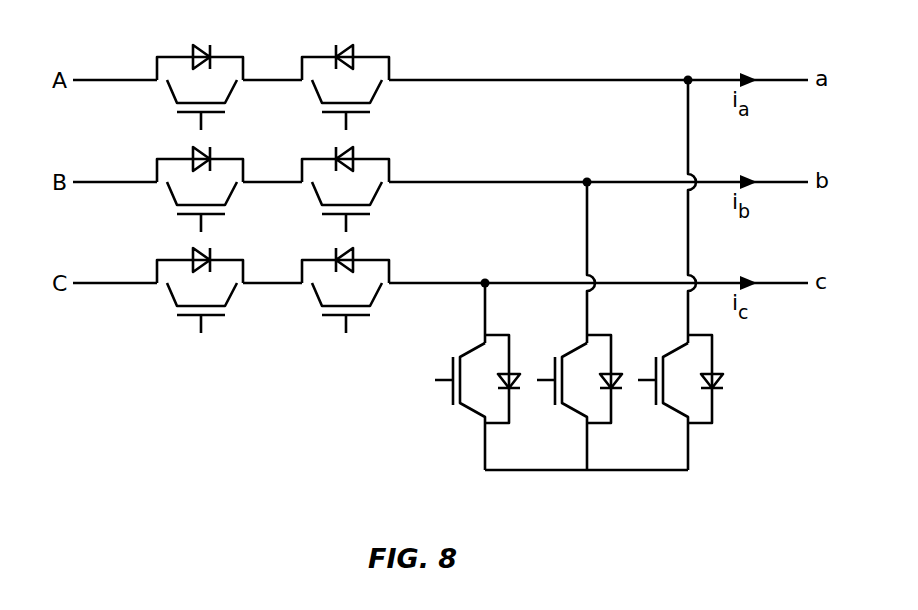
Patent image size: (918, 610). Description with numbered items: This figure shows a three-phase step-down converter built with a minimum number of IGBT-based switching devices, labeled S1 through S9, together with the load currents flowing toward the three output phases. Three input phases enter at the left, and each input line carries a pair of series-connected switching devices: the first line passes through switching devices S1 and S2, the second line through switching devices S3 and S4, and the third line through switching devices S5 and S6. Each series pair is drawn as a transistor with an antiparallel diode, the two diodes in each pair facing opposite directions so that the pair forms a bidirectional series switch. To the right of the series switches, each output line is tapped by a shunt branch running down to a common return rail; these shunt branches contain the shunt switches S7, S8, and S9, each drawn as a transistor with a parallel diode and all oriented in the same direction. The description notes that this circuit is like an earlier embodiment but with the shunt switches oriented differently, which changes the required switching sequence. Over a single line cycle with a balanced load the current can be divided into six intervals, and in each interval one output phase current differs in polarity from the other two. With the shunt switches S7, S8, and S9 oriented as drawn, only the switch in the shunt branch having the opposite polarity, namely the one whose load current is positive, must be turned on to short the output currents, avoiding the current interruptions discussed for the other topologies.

The IGBT-based switching device S1 is at (211, 87).
The IGBT-based switching device S2 is at (356, 87).
The IGBT-based switching device S3 is at (211, 189).
The IGBT-based switching device S4 is at (356, 189).
The IGBT-based switching device S5 is at (211, 290).
The IGBT-based switching device S6 is at (356, 290).
The shunt switch S7 is at (477, 402).
The shunt switch S8 is at (579, 402).
The shunt switch S9 is at (680, 402).